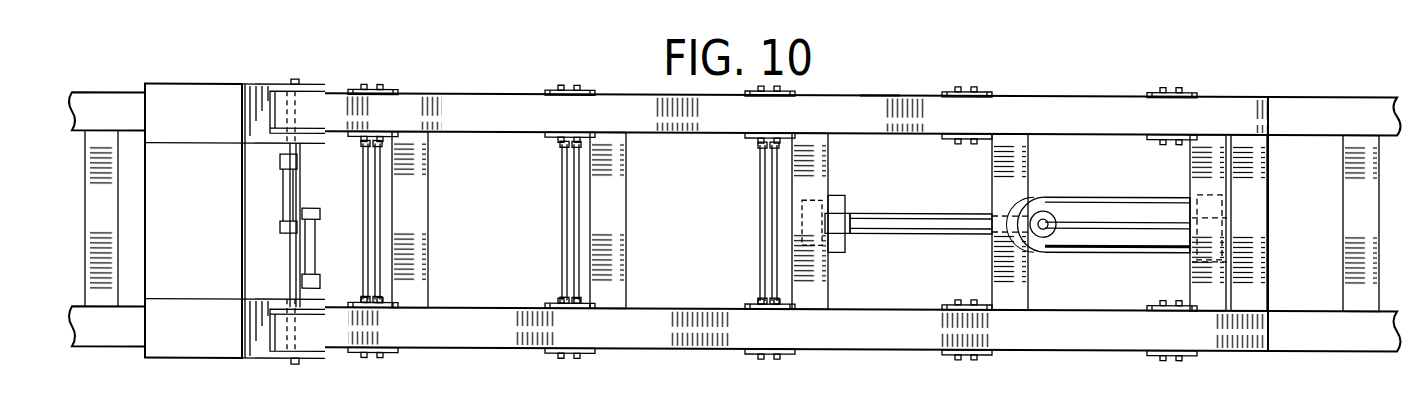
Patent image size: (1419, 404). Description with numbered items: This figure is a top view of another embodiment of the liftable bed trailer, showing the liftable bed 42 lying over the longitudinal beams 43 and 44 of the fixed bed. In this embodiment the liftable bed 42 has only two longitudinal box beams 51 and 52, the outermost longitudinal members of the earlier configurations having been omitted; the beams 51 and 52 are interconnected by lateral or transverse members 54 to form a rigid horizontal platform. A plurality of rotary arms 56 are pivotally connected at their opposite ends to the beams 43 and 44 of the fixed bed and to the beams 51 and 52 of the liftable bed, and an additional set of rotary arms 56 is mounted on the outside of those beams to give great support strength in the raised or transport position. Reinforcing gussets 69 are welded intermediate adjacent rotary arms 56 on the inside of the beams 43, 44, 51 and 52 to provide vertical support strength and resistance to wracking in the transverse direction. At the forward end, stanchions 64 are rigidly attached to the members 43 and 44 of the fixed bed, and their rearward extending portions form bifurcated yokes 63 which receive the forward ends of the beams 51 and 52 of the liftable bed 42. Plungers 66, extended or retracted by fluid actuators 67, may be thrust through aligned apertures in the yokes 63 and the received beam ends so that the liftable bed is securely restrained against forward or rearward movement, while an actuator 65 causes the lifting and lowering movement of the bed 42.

The liftable bed 42 is at (877, 92).
The longitudinal beam 43 is at (90, 330).
The longitudinal beam 44 is at (103, 102).
The longitudinal box beam 51 is at (475, 328).
The longitudinal box beam 52 is at (468, 100).
The lateral member 54 is at (415, 268).
The rotary arm 56 is at (392, 91).
The bifurcated yoke 63 is at (258, 90).
The stanchion 64 is at (160, 92).
The actuator 65 is at (1082, 207).
The plunger 66 is at (305, 80).
The fluid actuator 67 is at (283, 182).
The reinforcing gusset 69 is at (365, 182).